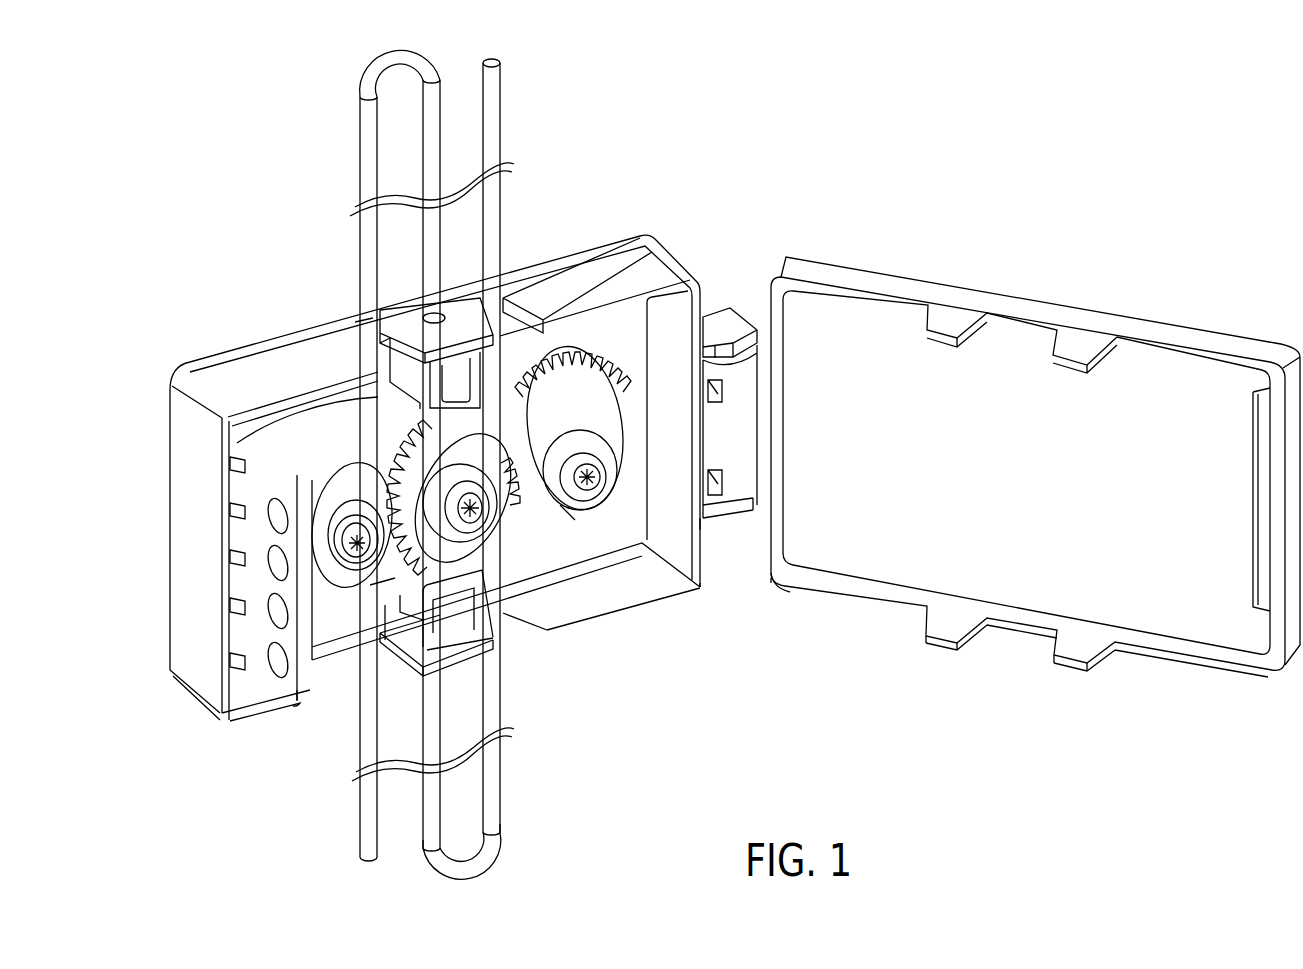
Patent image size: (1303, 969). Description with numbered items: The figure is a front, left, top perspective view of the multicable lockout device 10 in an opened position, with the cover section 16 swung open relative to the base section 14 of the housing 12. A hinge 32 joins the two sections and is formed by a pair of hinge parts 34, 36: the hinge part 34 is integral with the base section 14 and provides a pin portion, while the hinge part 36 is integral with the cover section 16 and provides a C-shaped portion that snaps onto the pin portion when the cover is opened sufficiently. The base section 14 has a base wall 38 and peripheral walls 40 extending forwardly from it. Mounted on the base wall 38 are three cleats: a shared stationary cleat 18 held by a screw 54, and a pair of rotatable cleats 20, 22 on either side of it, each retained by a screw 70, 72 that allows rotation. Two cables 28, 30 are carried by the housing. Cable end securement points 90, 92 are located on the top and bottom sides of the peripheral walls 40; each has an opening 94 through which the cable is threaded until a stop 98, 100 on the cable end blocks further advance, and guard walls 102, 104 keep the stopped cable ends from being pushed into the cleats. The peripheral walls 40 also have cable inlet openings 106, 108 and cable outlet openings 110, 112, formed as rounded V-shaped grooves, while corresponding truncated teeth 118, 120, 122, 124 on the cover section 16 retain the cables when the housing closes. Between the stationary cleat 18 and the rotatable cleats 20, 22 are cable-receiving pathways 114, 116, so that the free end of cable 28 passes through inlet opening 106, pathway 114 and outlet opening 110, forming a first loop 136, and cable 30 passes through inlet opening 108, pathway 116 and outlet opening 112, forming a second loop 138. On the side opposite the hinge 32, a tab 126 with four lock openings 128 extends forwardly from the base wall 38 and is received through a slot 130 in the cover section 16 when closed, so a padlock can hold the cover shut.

The multicable lockout device 10 is at (849, 140).
The housing 12 is at (777, 268).
The base section 14 is at (600, 593).
The cover section 16 is at (862, 585).
The stationary cleat 18 is at (528, 618).
The rotatable cleat 20 is at (366, 587).
The rotatable cleat 22 is at (534, 427).
The cable 28 is at (432, 76).
The cable 30 is at (437, 862).
The hinge 32 is at (729, 553).
The hinge part 34 is at (739, 330).
The hinge part 36 is at (742, 452).
The base wall 38 is at (572, 551).
The peripheral walls 40 is at (256, 375).
The screw 54 is at (473, 513).
The screw 70 is at (357, 540).
The screw 72 is at (587, 483).
The cable end securement point 90 is at (460, 312).
The cable end securement point 92 is at (455, 678).
The opening 94 is at (425, 318).
The stop 98 is at (450, 376).
The stop 100 is at (438, 626).
The guard wall 102 is at (516, 322).
The guard wall 104 is at (413, 625).
The cable inlet opening 106 is at (360, 338).
The cable inlet opening 108 is at (527, 628).
The cable outlet opening 110 is at (365, 648).
The cable outlet opening 112 is at (518, 310).
The cable-receiving pathway 114 is at (402, 578).
The cable-receiving pathway 116 is at (512, 487).
The truncated tooth 118 is at (943, 343).
The truncated tooth 120 is at (1072, 366).
The truncated tooth 122 is at (940, 648).
The truncated tooth 124 is at (1072, 661).
The tab 126 is at (292, 703).
The lock openings 128 is at (277, 678).
The slot 130 is at (1256, 490).
The first loop 136 is at (386, 104).
The second loop 138 is at (496, 845).